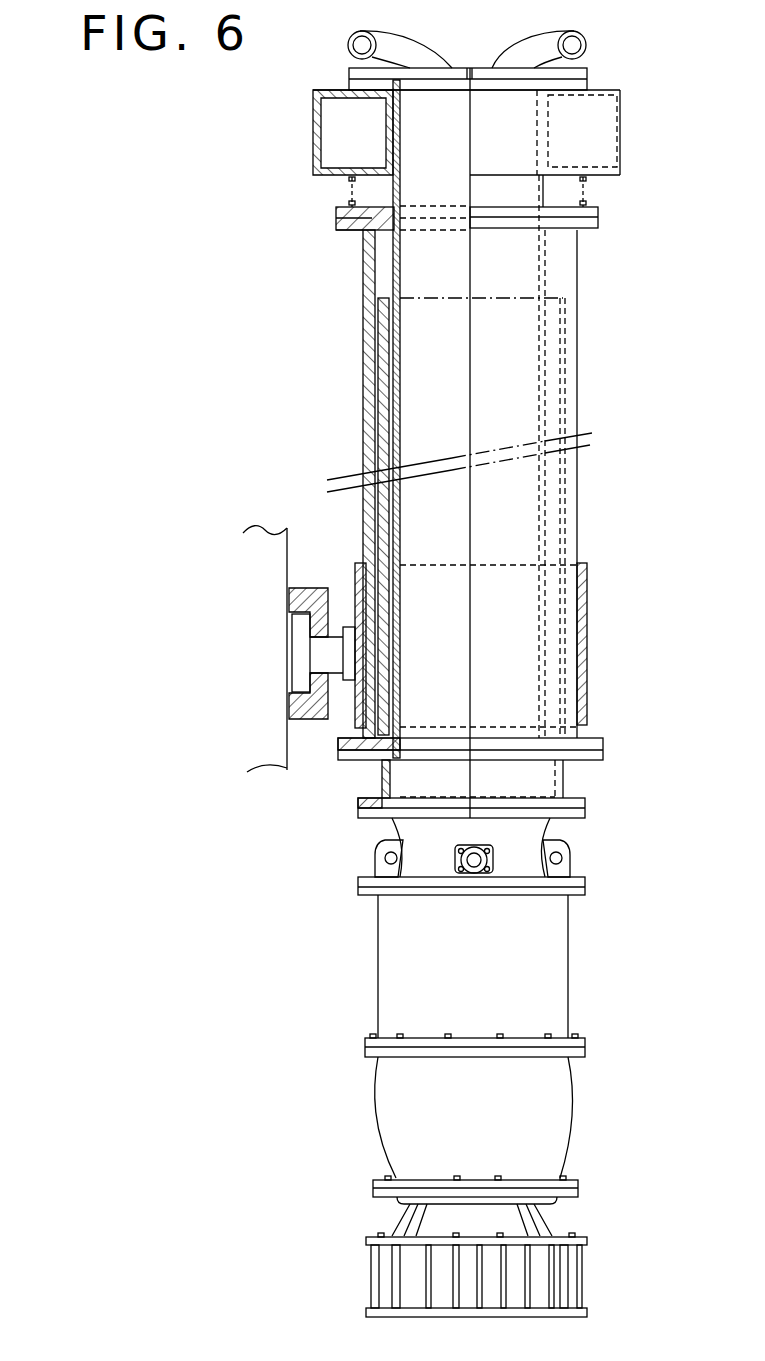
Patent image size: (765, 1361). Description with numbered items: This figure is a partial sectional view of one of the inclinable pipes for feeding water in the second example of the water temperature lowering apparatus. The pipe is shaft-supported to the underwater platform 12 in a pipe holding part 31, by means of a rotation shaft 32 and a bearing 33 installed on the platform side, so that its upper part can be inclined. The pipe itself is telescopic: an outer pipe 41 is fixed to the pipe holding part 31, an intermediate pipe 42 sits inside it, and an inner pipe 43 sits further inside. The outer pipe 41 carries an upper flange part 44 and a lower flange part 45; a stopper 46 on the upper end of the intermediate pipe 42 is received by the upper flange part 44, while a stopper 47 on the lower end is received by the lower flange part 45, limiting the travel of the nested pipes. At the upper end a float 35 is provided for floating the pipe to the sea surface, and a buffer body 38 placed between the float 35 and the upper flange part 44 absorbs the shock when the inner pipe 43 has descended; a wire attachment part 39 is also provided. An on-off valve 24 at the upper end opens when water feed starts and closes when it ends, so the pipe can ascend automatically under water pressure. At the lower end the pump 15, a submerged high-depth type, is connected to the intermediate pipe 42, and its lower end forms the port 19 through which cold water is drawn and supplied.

The underwater platform 12 is at (262, 545).
The pump 15 is at (571, 1126).
The injection port 19 is at (477, 67).
The on-off valve 24 is at (458, 68).
The pipe holding part 31 is at (588, 658).
The rotation shaft 32 is at (318, 653).
The bearing 33 is at (313, 587).
The float 35 is at (313, 133).
The buffer body 38 is at (349, 190).
The wire attachment part 39 is at (570, 857).
The outer pipe 41 is at (360, 498).
The intermediate pipe 42 is at (560, 428).
The inner pipe 43 is at (545, 192).
The upper flange part 44 is at (352, 213).
The lower flange part 45 is at (367, 743).
The stopper 46 is at (380, 312).
The stopper 47 is at (382, 752).